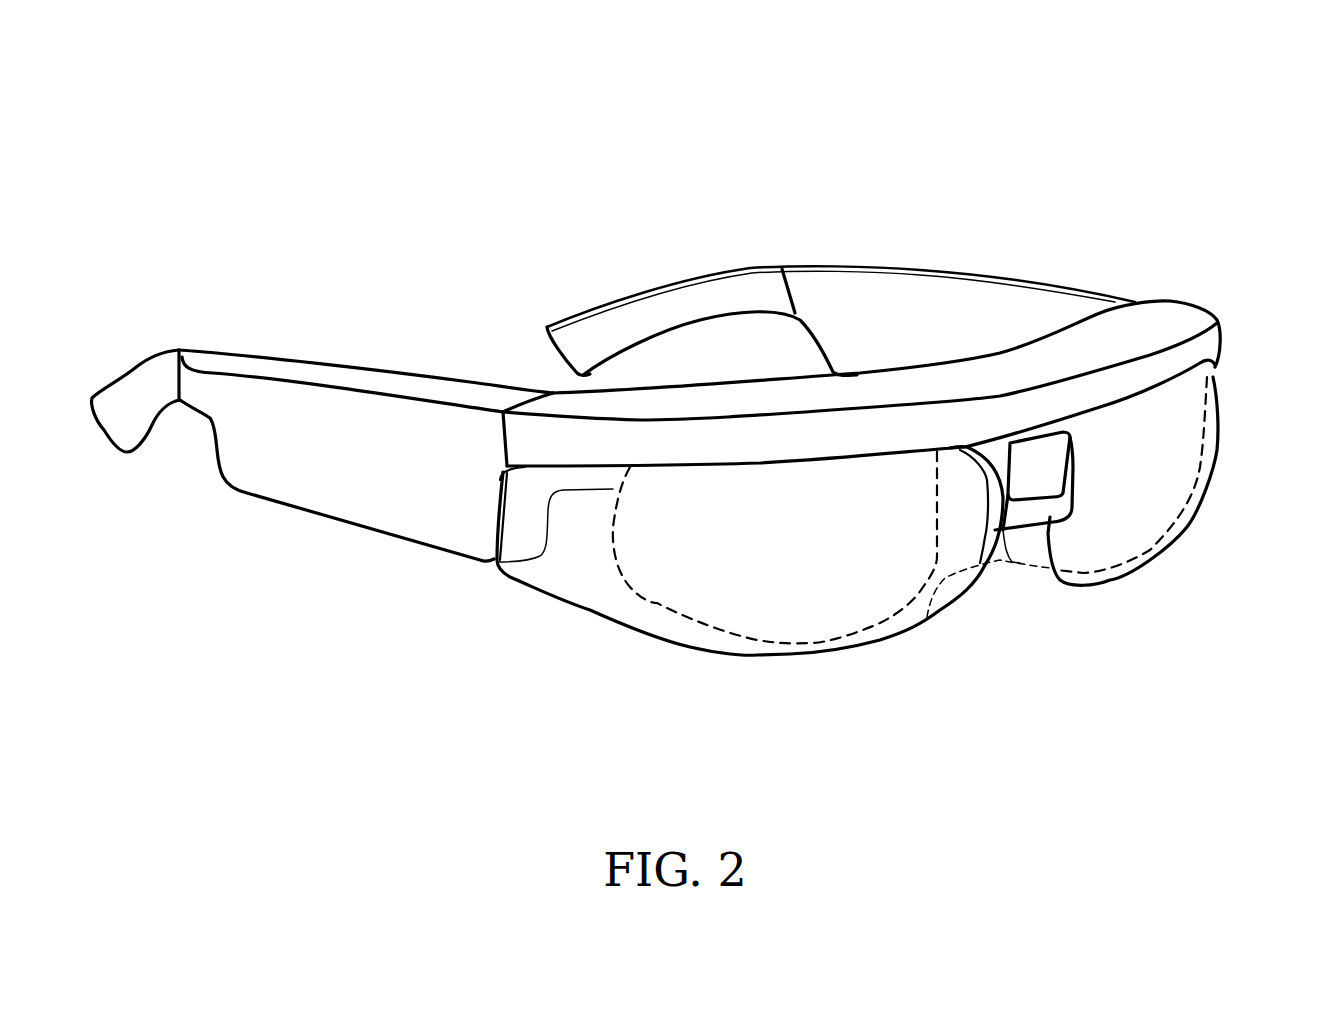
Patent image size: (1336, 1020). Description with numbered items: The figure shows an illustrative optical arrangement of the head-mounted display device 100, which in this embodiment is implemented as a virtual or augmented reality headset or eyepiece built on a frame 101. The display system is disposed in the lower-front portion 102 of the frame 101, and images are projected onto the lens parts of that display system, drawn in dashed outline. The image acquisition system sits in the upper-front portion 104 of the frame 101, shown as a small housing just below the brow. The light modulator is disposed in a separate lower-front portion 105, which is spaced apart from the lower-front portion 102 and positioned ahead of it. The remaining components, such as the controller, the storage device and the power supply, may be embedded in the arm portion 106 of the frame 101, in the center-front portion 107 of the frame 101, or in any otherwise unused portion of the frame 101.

The head-mounted display device 100 is at (1228, 133).
The frame 101 is at (677, 298).
The lower-front portion 102 is at (810, 646).
The upper-front portion 104 is at (1037, 463).
The lower-front portion 105 is at (967, 607).
The arm portion 106 is at (377, 512).
The center-front portion 107 is at (1162, 314).